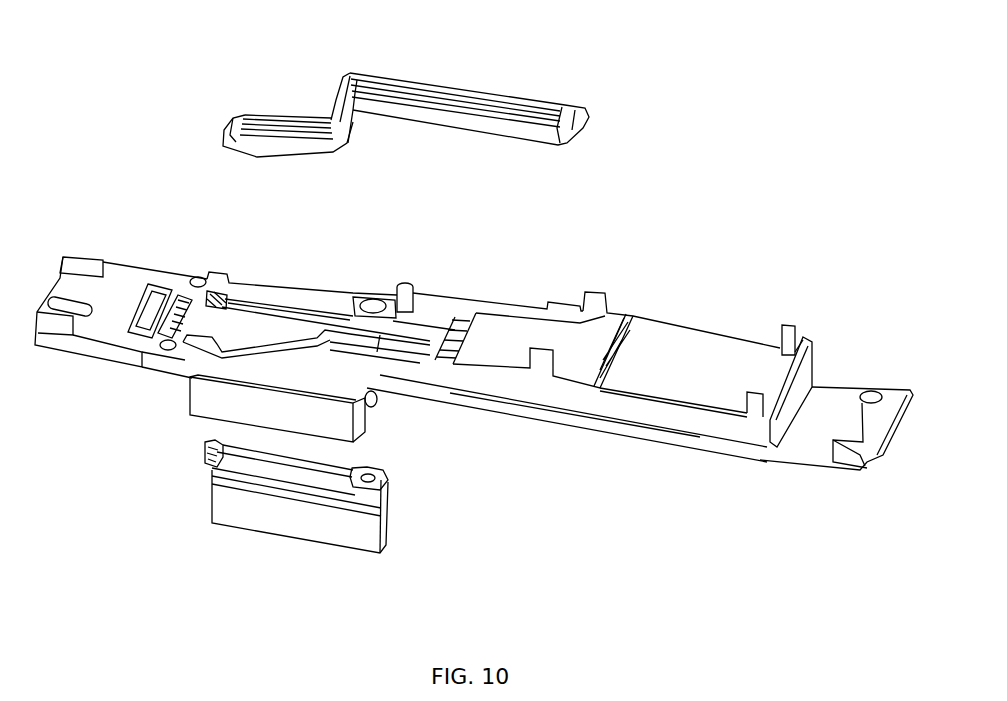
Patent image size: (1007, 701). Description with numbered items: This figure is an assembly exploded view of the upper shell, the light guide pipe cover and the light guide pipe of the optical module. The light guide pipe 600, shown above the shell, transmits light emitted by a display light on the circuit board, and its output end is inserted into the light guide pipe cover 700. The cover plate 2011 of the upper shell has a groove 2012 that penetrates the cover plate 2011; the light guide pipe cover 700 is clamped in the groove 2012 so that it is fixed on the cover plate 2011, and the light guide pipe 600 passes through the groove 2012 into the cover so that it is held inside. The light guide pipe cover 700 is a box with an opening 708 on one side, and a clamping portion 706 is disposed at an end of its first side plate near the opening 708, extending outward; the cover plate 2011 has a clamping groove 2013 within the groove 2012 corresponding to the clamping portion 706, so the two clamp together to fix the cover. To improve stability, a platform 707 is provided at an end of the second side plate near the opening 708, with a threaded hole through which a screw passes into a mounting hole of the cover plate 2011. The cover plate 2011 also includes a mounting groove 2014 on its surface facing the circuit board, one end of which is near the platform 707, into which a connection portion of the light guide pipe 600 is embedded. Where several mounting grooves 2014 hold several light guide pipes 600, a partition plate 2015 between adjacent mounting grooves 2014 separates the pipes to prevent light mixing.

The light guide pipe 600 is at (436, 75).
The cover plate 2011 is at (654, 348).
The groove 2012 is at (250, 302).
The clamping groove 2013 is at (217, 292).
The mounting groove 2014 is at (417, 312).
The partition plate 2015 is at (464, 304).
The light guide pipe cover 700 is at (291, 522).
The clamping portion 706 is at (212, 448).
The platform 707 is at (381, 484).
The opening 708 is at (268, 474).